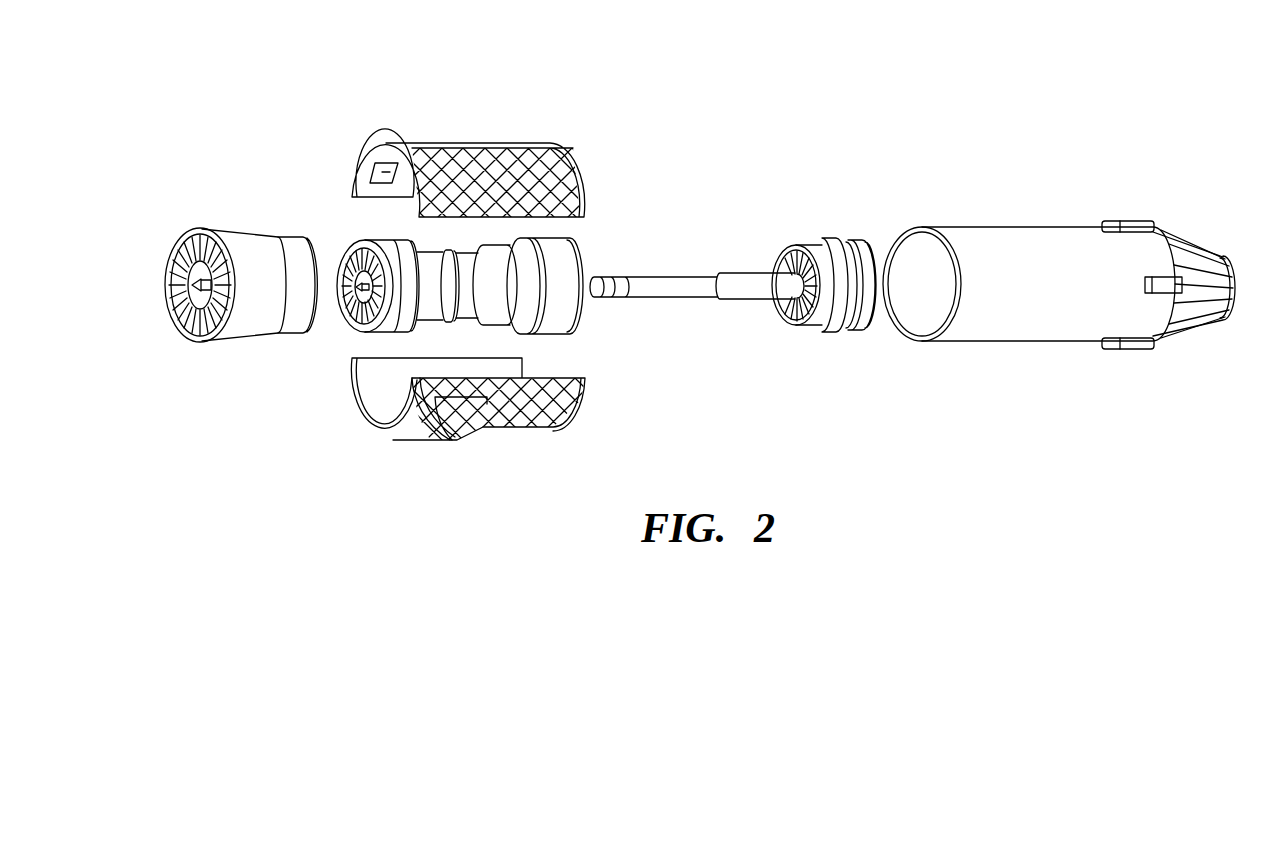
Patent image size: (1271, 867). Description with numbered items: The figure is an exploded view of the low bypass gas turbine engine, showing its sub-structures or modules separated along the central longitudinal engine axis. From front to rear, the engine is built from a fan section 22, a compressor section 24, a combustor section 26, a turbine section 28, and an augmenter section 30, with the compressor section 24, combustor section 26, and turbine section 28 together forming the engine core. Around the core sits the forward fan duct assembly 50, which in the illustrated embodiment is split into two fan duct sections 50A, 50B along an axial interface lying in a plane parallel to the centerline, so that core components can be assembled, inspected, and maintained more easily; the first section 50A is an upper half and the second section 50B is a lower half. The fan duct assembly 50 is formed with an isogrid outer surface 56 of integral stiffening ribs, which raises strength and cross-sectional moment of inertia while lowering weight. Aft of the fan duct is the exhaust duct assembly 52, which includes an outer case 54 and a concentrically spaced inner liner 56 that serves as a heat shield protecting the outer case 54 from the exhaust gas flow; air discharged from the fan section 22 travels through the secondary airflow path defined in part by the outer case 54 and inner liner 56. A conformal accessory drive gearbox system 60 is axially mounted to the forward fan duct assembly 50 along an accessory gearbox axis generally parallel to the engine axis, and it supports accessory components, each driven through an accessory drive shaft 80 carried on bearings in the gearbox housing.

The fan section 22 is at (168, 264).
The compressor section 24 is at (385, 236).
The combustor section 26 is at (517, 267).
The turbine section 28 is at (563, 266).
The augmenter section 30 is at (838, 218).
The forward fan duct assembly 50 is at (484, 112).
The first section of the fan duct assembly 50A is at (469, 152).
The second section of the fan duct assembly 50B is at (490, 430).
The exhaust duct assembly 52 is at (1026, 214).
The outer case 54 is at (575, 378).
The inner liner 56 is at (520, 150).
The conformal accessory drive gearbox system 60 is at (442, 441).
The accessory drive shaft 80 is at (363, 158).